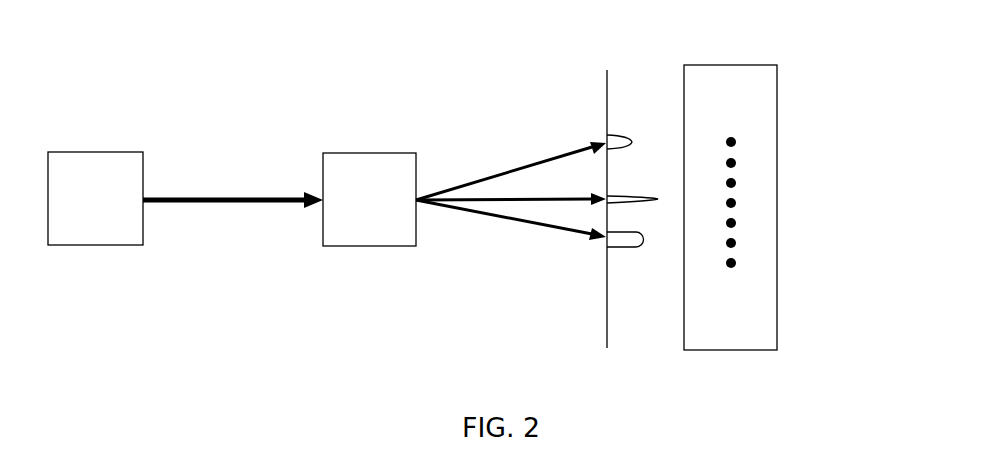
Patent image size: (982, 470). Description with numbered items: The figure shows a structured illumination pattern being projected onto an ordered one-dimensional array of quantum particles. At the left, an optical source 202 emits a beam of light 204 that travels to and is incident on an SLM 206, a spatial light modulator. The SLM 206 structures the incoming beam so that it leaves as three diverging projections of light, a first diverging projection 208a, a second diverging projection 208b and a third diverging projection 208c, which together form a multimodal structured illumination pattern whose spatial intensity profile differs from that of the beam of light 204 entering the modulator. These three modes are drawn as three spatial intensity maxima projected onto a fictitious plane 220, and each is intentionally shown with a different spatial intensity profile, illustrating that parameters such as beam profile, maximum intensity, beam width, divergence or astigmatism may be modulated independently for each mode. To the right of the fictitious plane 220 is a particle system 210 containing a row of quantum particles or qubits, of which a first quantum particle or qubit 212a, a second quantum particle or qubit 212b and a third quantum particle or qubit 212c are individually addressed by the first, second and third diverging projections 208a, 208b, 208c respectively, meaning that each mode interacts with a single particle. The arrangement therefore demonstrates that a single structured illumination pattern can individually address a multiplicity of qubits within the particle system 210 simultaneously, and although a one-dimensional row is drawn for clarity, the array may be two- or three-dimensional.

The optical source 202 is at (73, 214).
The beam of light 204 is at (215, 198).
The SLM 206 is at (348, 213).
The first diverging projection 208a is at (607, 134).
The second diverging projection 208b is at (603, 192).
The third diverging projection 208c is at (604, 240).
The fictitious plane 220 is at (607, 95).
The particle system 210 is at (730, 351).
The first quantum particle or qubit 212a is at (736, 142).
The second quantum particle or qubit 212b is at (737, 203).
The third quantum particle or qubit 212c is at (737, 243).